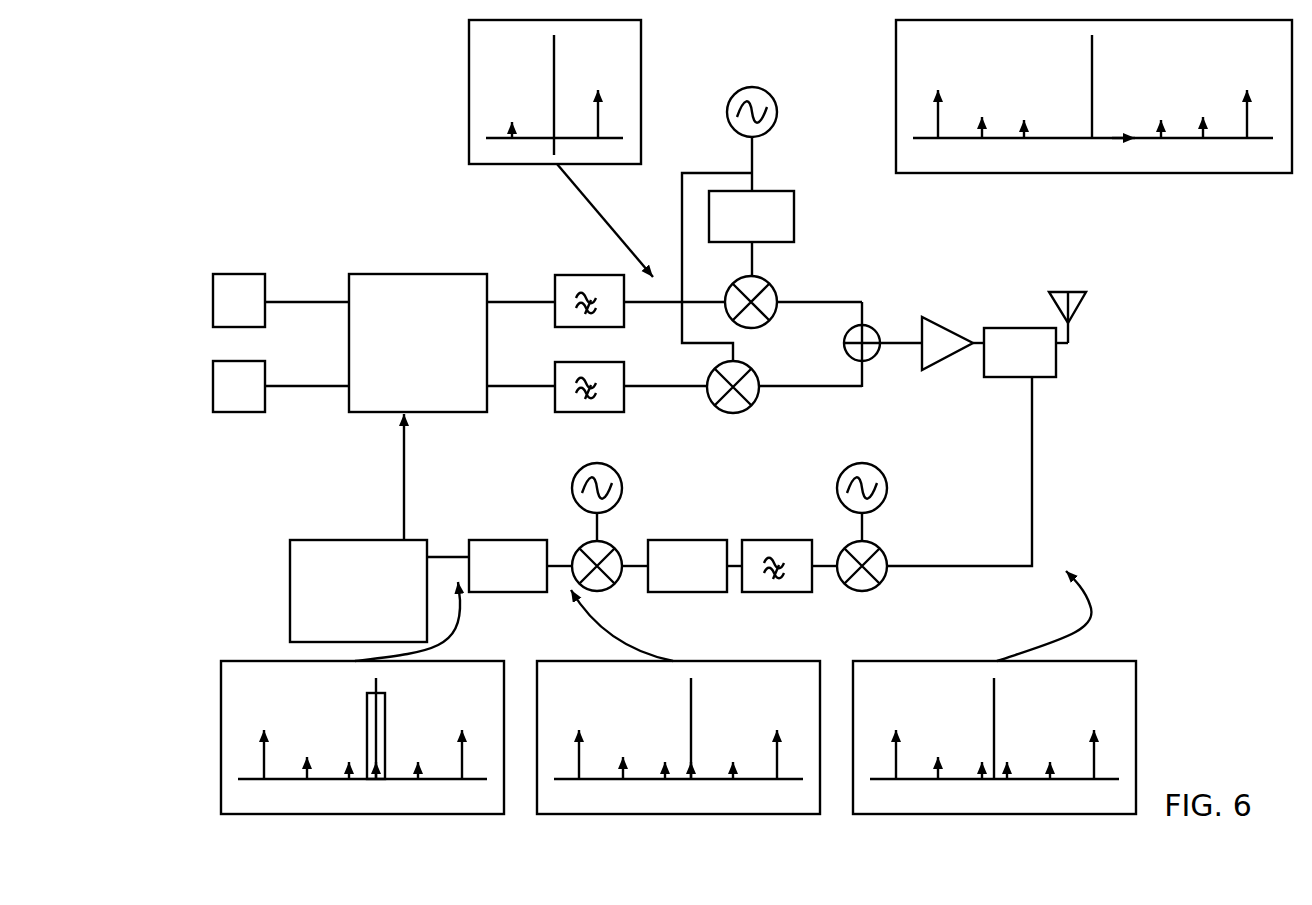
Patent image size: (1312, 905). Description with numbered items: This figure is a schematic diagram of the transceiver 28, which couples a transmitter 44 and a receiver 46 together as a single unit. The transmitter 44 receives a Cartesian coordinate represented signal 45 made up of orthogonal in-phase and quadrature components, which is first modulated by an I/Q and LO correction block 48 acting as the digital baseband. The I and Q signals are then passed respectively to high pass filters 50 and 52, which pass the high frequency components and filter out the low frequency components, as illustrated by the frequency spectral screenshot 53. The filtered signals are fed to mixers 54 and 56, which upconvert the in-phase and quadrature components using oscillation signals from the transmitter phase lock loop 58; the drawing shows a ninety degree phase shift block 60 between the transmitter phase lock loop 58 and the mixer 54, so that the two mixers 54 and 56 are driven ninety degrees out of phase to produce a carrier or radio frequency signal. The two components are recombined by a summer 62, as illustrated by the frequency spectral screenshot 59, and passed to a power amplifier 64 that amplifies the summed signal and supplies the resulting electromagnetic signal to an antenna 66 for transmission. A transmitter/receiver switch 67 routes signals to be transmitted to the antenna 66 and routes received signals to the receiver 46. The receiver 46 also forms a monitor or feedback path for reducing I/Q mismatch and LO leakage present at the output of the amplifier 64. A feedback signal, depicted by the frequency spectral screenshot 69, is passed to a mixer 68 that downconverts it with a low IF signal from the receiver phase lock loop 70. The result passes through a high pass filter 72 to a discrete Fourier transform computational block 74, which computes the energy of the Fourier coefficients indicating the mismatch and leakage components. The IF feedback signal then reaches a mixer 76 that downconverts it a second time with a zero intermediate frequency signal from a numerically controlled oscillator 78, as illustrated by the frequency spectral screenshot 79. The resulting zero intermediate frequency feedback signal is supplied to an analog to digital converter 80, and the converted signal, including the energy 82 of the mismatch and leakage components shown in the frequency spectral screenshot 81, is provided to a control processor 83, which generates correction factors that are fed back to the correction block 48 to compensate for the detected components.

The transceiver 28 is at (268, 157).
The transmitter 44 is at (329, 268).
The signal 45 is at (202, 346).
The receiver 46 is at (1126, 608).
The I/Q and LO correction block 48 is at (432, 274).
The high pass filter 50 is at (587, 275).
The high pass filter 52 is at (600, 412).
The frequency spectral screenshot 53 is at (641, 68).
The mixer 54 is at (769, 284).
The mixer 56 is at (753, 371).
The transmitter phase lock loop (PLL-TX) 58 is at (755, 88).
The frequency spectral screenshot 59 is at (1180, 173).
The 90 degree phase shifter 60 is at (770, 191).
The summer 62 is at (878, 338).
The power amplifier 64 is at (940, 320).
The antenna 66 is at (1078, 292).
The transmitter/receiver (T/R) switch 67 is at (1048, 377).
The mixer 68 is at (877, 586).
The frequency spectral screenshot 69 is at (1085, 661).
The receiver phase lock loop (PLL-RX) 70 is at (875, 463).
The high pass filter 72 is at (768, 540).
The discrete Fourier transform (DFT) computational block 74 is at (683, 540).
The mixer 76 is at (588, 540).
The numerically controlled oscillator (NCO) 78 is at (595, 460).
The frequency spectral screenshot 79 is at (758, 661).
The analog to digital converter (ADC) 80 is at (513, 540).
The frequency spectral screenshot 81 is at (374, 698).
The energy 82 is at (367, 710).
The control processor 83 is at (352, 540).